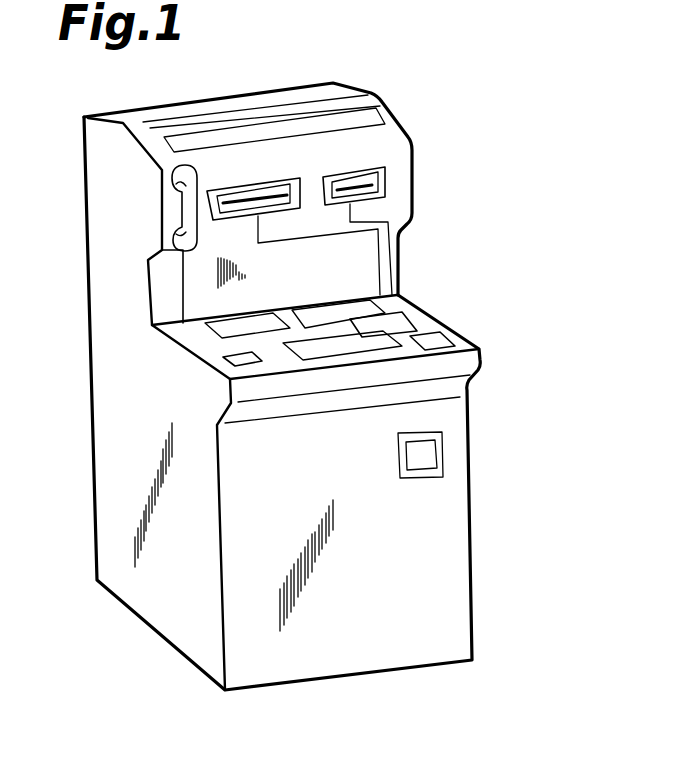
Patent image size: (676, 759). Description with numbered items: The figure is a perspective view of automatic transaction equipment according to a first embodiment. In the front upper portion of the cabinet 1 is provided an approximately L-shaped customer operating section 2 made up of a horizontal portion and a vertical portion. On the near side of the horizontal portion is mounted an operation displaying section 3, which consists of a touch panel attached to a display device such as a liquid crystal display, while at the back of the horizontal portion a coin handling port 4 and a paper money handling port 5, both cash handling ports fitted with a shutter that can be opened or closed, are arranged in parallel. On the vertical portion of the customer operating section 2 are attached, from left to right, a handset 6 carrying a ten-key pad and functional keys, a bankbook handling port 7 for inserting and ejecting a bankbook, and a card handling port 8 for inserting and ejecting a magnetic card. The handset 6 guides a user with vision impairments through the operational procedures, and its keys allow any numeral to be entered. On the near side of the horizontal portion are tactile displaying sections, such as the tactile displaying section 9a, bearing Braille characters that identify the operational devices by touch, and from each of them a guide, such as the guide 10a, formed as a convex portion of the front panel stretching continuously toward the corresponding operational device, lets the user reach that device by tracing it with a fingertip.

The cabinet 1 is at (82, 160).
The customer operating section 2 is at (382, 143).
The operation displaying section 3 is at (350, 345).
The coin handling port 4 is at (208, 343).
The paper money handling port 5 is at (357, 310).
The handset 6 is at (186, 212).
The bankbook handling port 7 is at (262, 188).
The card handling port 8 is at (380, 180).
The tactile displaying section 9a is at (228, 360).
The guide 10a is at (182, 286).